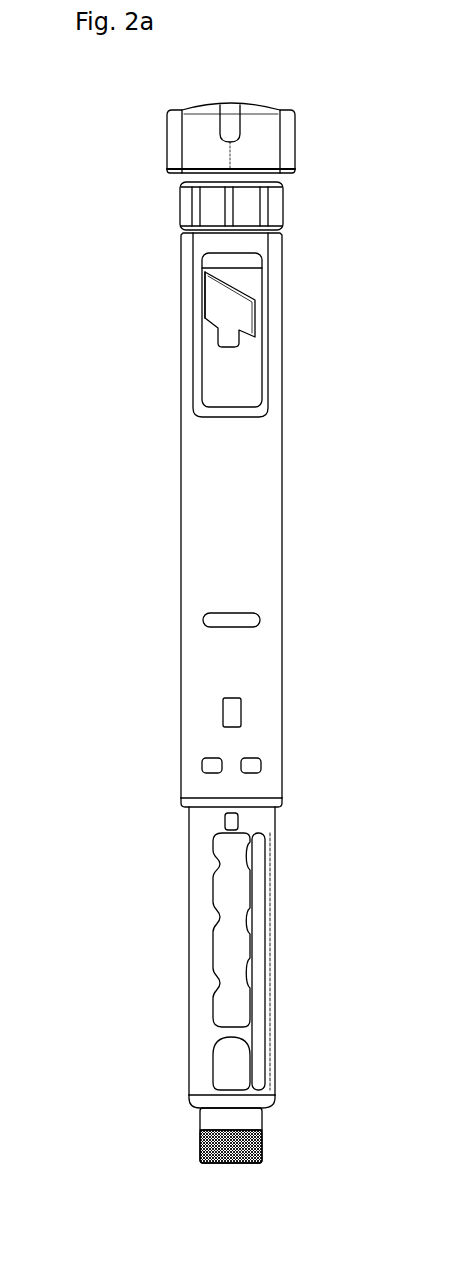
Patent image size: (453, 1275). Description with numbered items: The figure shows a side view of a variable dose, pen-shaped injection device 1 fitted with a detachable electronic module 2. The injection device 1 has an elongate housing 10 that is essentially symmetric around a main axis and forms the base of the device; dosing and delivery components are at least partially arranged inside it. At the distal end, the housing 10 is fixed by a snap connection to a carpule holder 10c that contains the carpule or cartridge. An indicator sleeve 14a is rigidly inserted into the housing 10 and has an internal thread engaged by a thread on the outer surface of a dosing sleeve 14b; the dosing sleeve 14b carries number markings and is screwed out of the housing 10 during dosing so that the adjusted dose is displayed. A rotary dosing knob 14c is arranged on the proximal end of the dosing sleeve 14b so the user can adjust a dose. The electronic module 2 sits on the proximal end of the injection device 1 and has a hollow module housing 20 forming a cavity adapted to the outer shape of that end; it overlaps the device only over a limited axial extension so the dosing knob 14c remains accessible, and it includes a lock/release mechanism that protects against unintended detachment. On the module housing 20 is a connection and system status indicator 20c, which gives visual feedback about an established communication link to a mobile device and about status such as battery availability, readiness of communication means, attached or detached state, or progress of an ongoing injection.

The injection device 1 is at (128, 862).
The electronic module 2 is at (127, 138).
The module housing 20 is at (292, 99).
The connection and system status indicator 20c is at (233, 108).
The dosing knob 14c is at (288, 203).
The indicator sleeve 14a is at (246, 370).
The dosing sleeve 14b is at (246, 300).
The housing 10 is at (181, 680).
The carpule holder 10c is at (178, 945).